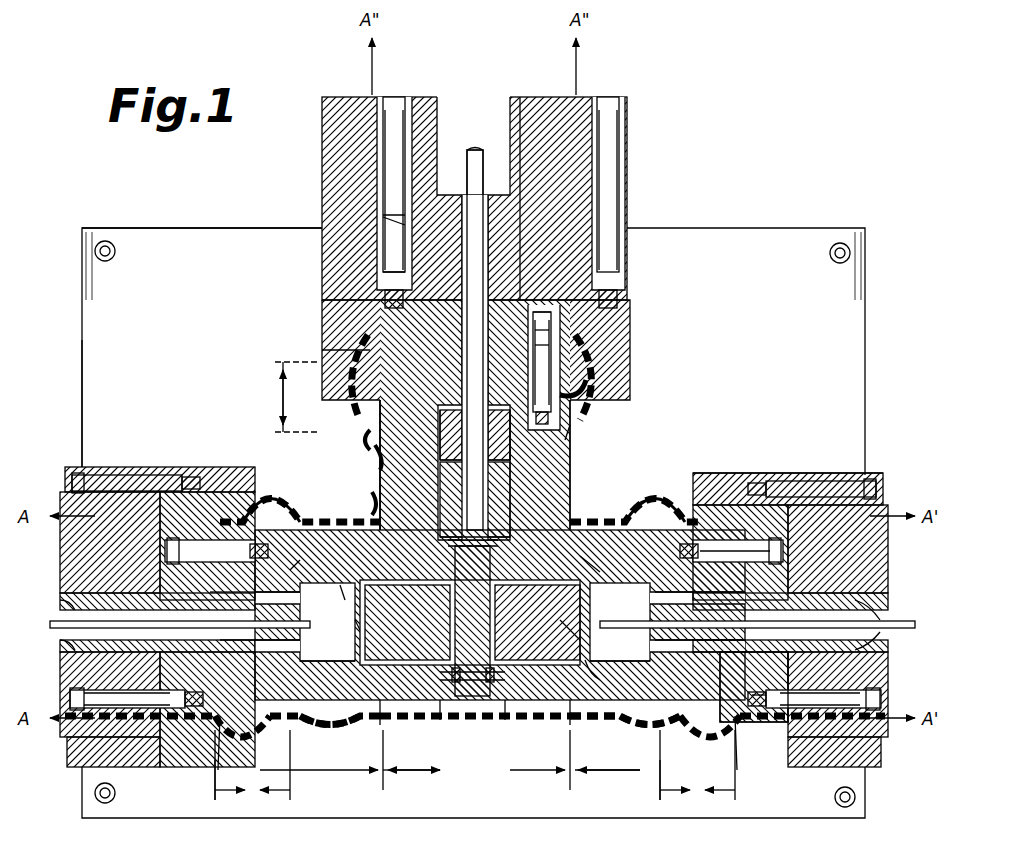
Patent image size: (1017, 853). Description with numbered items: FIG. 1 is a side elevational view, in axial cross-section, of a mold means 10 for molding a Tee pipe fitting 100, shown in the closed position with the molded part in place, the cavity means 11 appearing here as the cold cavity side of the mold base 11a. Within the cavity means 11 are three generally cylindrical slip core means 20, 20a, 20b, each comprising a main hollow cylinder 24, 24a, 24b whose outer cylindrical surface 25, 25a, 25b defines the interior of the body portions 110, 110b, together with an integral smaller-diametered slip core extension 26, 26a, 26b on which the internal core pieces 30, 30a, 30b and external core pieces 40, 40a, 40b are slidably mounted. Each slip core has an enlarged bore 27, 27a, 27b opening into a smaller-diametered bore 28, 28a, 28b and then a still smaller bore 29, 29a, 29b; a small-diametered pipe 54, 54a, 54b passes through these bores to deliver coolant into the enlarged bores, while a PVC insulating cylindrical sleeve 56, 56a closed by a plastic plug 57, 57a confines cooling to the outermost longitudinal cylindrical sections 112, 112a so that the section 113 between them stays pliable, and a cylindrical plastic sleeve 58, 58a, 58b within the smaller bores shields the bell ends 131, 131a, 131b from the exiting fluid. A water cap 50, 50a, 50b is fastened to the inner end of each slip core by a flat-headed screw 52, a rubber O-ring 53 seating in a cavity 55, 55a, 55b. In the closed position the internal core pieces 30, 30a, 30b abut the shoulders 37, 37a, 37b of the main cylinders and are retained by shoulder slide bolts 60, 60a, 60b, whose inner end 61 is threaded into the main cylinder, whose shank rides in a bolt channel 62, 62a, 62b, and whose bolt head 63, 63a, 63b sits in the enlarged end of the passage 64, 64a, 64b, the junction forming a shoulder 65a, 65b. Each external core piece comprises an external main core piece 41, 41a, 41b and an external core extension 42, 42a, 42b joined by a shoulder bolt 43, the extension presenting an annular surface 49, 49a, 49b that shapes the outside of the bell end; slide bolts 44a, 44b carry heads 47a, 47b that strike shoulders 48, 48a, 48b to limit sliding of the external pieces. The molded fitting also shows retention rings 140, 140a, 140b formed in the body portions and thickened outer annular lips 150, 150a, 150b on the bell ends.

The mold means 10 is at (186, 226).
The cavity means 11 is at (125, 303).
The cold cavity side of the mold base 11a is at (95, 348).
The slip core means 20 is at (362, 722).
The slip core means 20a is at (565, 722).
The slip core means 20b is at (570, 450).
The main hollow cylinder 24 is at (390, 725).
The main hollow cylinder 24a is at (560, 722).
The main hollow cylinder 24b is at (565, 472).
The outer cylindrical surface 25 is at (435, 722).
The outer cylindrical surface 25a is at (600, 723).
The outer cylindrical surface 25b is at (570, 490).
The slip core extension 26 is at (282, 606).
The slip core extension 26a is at (760, 660).
The slip core extension 26b is at (500, 435).
The enlarged bore 27 is at (327, 646).
The enlarged bore 27a is at (620, 646).
The enlarged bore 27b is at (508, 426).
The smaller-diametered bore 28 is at (237, 640).
The smaller-diametered bore 28a is at (722, 640).
The smaller-diametered bore 28b is at (452, 435).
The still smaller bore 29 is at (62, 670).
The still smaller bore 29a is at (868, 605).
The still smaller bore 29b is at (475, 185).
The internal core piece 30 is at (262, 726).
The internal core piece 30a is at (700, 728).
The internal core piece 30b is at (598, 412).
The shoulder 37 is at (305, 622).
The shoulder 37a is at (667, 622).
The shoulder 37b is at (340, 352).
The external core piece 40 is at (130, 745).
The external core piece 40a is at (790, 745).
The external core piece 40b is at (540, 105).
The external main core piece 41 is at (120, 740).
The external main core piece 41a is at (818, 478).
The external main core piece 41b is at (590, 102).
The external core extension 42 is at (190, 740).
The external core extension 42a is at (760, 505).
The external core extension 42b is at (630, 368).
The shoulder bolt 43 is at (610, 255).
The slide bolt 44a is at (825, 712).
The slide bolt 44b is at (392, 256).
The head of slide bolt 47a is at (870, 700).
The head of slide bolt 47b is at (392, 215).
The shoulder 48 is at (120, 710).
The shoulder 48a is at (830, 715).
The shoulder 48b is at (385, 286).
The annular surface 49 is at (268, 495).
The annular surface 49a is at (660, 495).
The annular surface 49b is at (365, 432).
The water cap 50 is at (445, 724).
The water cap 50a is at (500, 724).
The water cap 50b is at (480, 537).
The flat-headed screw 52 is at (452, 575).
The rubber O-ring 53 is at (455, 512).
The small-diametered pipe 54 is at (55, 628).
The small-diametered pipe 54a is at (900, 630).
The small-diametered pipe 54b is at (480, 148).
The cavity 55 is at (508, 426).
The cavity 55a is at (508, 426).
The cavity 55b is at (500, 448).
The PVC insulating cylindrical sleeve 56 is at (347, 632).
The PVC insulating cylindrical sleeve 56a is at (564, 629).
The plastic plug 57 is at (343, 596).
The plastic plug 57a is at (591, 676).
The cylindrical plastic sleeve 58 is at (277, 640).
The cylindrical plastic sleeve 58a is at (677, 640).
The cylindrical plastic sleeve 58b is at (452, 448).
The shoulder slide bolt 60 is at (370, 500).
The shoulder slide bolt 60a is at (676, 604).
The shoulder slide bolt 60b is at (555, 335).
The inner end of slide bolt 61 is at (292, 558).
The bolt channel 62 is at (252, 606).
The bolt channel 62a is at (607, 559).
The bolt channel 62b is at (592, 380).
The bolt head 63 is at (195, 540).
The bolt head 63a is at (790, 552).
The bolt head 63b is at (560, 312).
The enlarged end of passage 64 is at (225, 606).
The enlarged end of passage 64a is at (760, 540).
The enlarged end of passage 64b is at (555, 322).
The shoulder 65a is at (721, 604).
The shoulder 65b is at (555, 350).
The Tee pipe fitting 100 is at (670, 500).
The body portion 110 is at (660, 792).
The body portion 110b is at (283, 515).
The outermost longitudinal cylindrical section 112 is at (301, 765).
The outermost longitudinal cylindrical section 112a is at (617, 779).
The section 113 is at (479, 760).
The bell end 131 is at (252, 826).
The bell end 131a is at (720, 830).
The bell end 131b is at (262, 397).
The retention ring 140 is at (345, 522).
The retention ring 140a is at (640, 520).
The retention ring 140b is at (378, 450).
The outer annular lip 150 is at (225, 735).
The outer annular lip 150a is at (780, 745).
The outer annular lip 150b is at (350, 335).